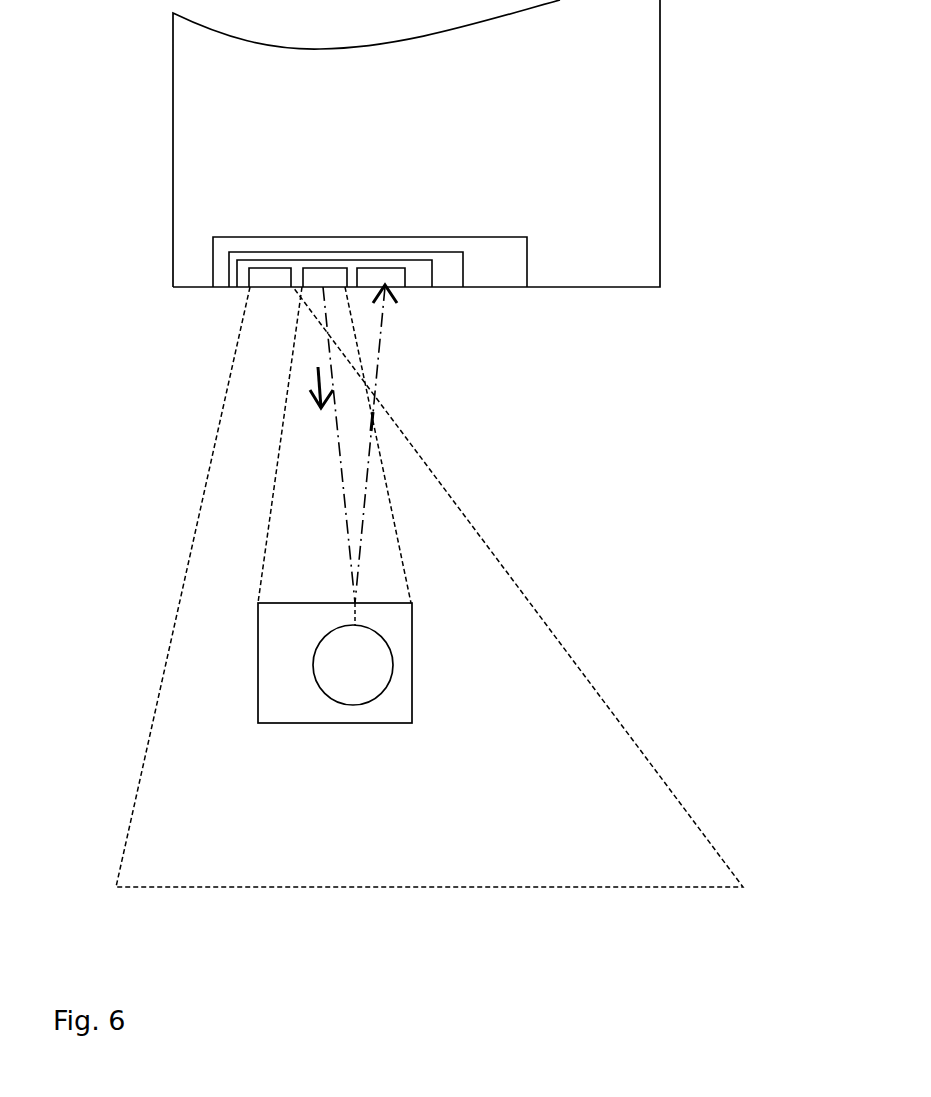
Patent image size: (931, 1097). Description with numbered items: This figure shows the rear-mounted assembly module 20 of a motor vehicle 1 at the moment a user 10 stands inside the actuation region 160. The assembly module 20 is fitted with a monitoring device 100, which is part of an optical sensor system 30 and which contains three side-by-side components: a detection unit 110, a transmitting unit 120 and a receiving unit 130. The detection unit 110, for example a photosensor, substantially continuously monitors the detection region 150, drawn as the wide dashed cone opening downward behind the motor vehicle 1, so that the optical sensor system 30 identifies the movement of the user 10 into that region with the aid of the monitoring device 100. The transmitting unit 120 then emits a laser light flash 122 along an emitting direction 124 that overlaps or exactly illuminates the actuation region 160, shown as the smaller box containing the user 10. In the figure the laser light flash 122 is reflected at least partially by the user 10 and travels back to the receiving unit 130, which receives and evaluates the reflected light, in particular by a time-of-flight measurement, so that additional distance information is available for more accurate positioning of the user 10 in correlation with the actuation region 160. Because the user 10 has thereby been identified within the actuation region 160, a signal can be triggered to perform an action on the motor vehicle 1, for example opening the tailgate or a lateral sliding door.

The motor vehicle 1 is at (722, 90).
The user 10 is at (378, 663).
The assembly module 20 is at (485, 235).
The optical sensor system 30 is at (463, 270).
The monitoring device 100 is at (432, 278).
The detection unit 110 is at (273, 268).
The transmitting unit 120 is at (320, 267).
The laser light flash 122 is at (372, 428).
The emitting direction 124 is at (313, 379).
The receiving unit 130 is at (380, 267).
The detection region 150 is at (663, 838).
The actuation region 160 is at (236, 615).